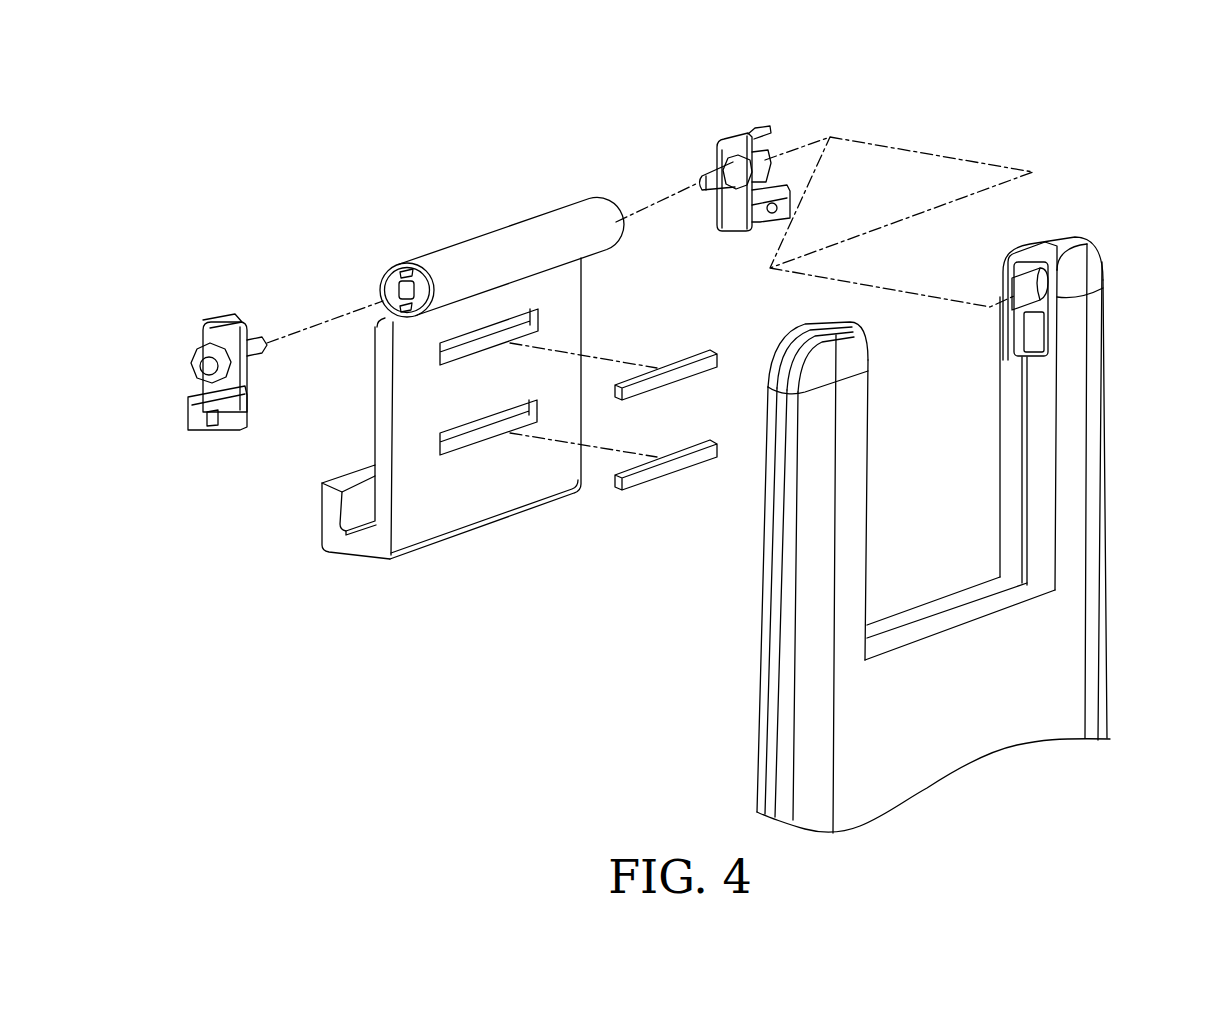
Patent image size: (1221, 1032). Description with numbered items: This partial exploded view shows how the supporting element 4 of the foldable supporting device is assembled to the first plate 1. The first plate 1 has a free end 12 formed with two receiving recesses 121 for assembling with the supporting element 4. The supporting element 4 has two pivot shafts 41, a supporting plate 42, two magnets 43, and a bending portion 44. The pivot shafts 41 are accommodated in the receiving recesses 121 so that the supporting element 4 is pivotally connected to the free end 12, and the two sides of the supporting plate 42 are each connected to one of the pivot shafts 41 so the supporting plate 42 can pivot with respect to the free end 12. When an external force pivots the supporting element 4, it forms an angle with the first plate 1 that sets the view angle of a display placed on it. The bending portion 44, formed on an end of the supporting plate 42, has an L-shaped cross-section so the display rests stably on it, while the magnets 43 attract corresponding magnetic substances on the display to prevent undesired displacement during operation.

The first plate 1 is at (974, 490).
The free end 12 is at (1097, 256).
The receiving recess 121 is at (1033, 322).
The supporting element 4 is at (650, 387).
The pivot shaft 41 is at (203, 345).
The supporting plate 42 is at (525, 460).
The magnet 43 is at (683, 353).
The bending portion 44 is at (345, 543).